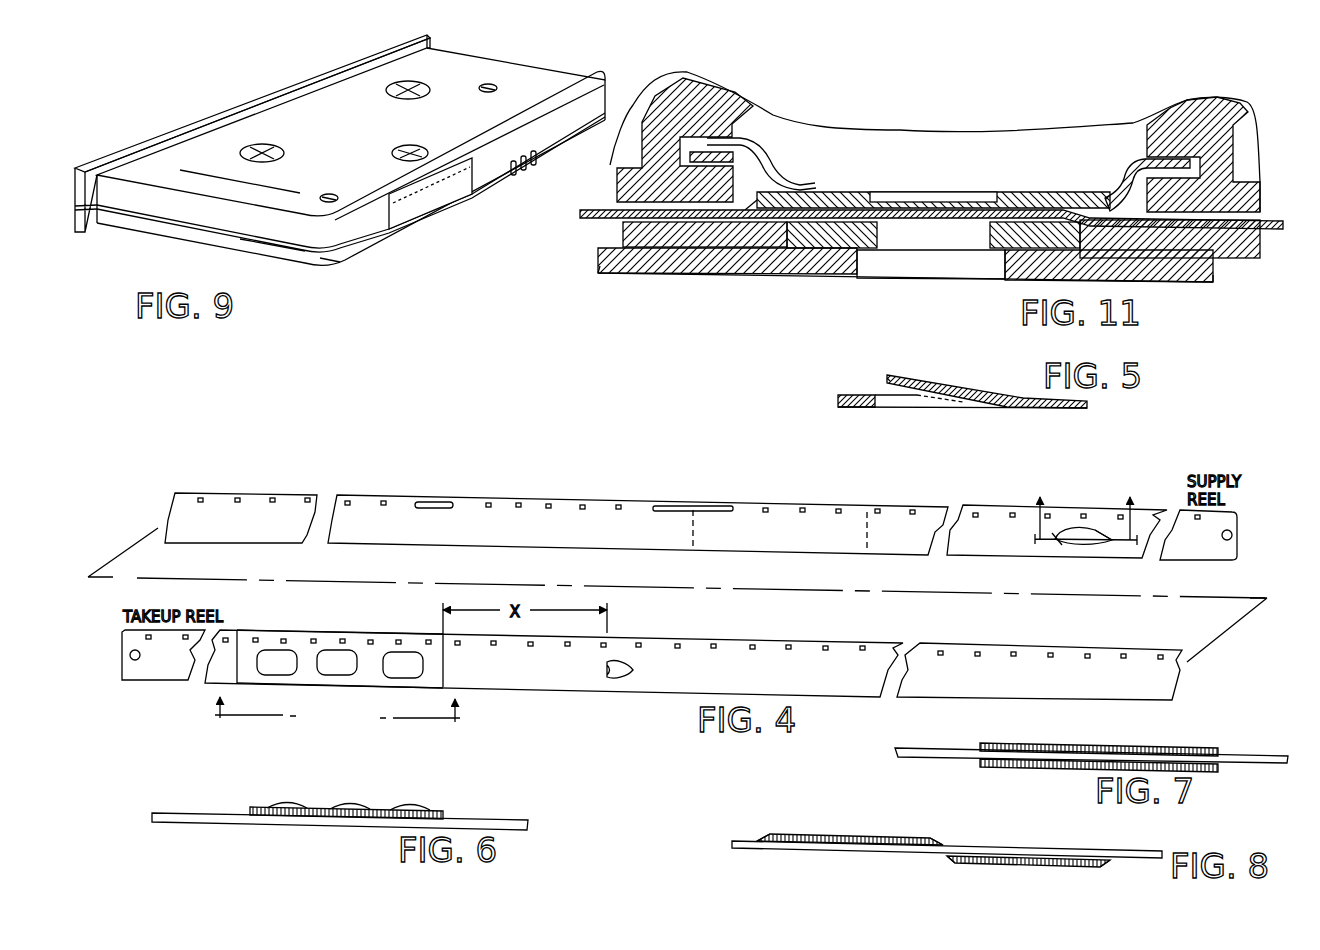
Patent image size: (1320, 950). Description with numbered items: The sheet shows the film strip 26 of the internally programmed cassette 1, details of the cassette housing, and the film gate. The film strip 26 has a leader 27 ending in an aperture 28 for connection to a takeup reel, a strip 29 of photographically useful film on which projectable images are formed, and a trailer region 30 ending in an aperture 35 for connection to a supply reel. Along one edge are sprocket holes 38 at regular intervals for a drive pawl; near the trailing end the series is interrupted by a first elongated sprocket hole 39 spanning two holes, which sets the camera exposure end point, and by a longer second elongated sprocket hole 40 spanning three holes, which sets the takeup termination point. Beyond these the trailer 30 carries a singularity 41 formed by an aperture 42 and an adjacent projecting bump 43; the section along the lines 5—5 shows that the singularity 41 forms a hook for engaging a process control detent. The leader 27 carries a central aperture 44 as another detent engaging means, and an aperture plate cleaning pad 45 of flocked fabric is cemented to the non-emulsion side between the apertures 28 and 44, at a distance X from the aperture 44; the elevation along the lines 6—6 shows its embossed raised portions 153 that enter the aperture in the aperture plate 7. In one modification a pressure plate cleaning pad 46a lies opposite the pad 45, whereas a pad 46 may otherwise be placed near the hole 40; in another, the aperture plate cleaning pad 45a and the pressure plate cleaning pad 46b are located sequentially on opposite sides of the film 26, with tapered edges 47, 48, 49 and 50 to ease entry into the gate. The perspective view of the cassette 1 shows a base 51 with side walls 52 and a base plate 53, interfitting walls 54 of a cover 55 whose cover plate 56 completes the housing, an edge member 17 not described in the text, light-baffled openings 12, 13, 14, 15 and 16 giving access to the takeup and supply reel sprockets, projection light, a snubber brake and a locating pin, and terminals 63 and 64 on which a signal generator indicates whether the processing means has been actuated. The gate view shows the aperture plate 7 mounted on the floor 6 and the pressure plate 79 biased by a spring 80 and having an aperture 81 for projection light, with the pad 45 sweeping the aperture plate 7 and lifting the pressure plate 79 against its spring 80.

In FIG. 9, the cassette 1 is at (478, 49).
In FIG. 4, the section line 5— 5 is at (1086, 506).
In FIG. 11, the floor 6 is at (825, 275).
In FIG. 4, the floor 6 is at (338, 727).
In FIG. 11, the aperture plate 7 is at (880, 252).
In FIG. 9, the light-baffled opening 12 is at (266, 160).
In FIG. 9, the light-baffled opening 13 is at (420, 93).
In FIG. 9, the light-baffled opening 14 is at (395, 154).
In FIG. 9, the light-baffled opening 15 is at (330, 193).
In FIG. 9, the light-baffled opening 16 is at (499, 89).
In FIG. 9, the rail 17 is at (333, 72).
In FIG. 9, the film strip 26 is at (440, 190).
In FIG. 11, the film strip 26 is at (592, 220).
In FIG. 5, the film strip 26 is at (1075, 410).
In FIG. 4, the film strip 26 is at (296, 486).
In FIG. 6, the film strip 26 is at (180, 813).
In FIG. 7, the film strip 26 is at (928, 748).
In FIG. 8, the film strip 26 is at (817, 853).
In FIG. 4, the leader 27 is at (172, 686).
In FIG. 4, the aperture 28 is at (130, 655).
In FIG. 4, the strip of photographically useful film 29 is at (292, 537).
In FIG. 4, the trailer region 30 is at (534, 496).
In FIG. 4, the aperture 35 is at (1233, 535).
In FIG. 4, the sprocket holes 38 is at (238, 497).
In FIG. 4, the first elongated sprocket hole 39 is at (450, 505).
In FIG. 4, the second elongated sprocket hole 40 is at (668, 508).
In FIG. 5, the singularity 41 is at (991, 390).
In FIG. 4, the singularity 41 is at (1093, 551).
In FIG. 5, the aperture 42 is at (883, 404).
In FIG. 4, the aperture 42 is at (1065, 547).
In FIG. 5, the projecting bump 43 is at (935, 386).
In FIG. 4, the projecting bump 43 is at (1076, 532).
In FIG. 4, the aperture 44 is at (606, 676).
In FIG. 11, the aperture plate cleaning pad 45 is at (967, 225).
In FIG. 4, the aperture plate cleaning pad 45 is at (350, 640).
In FIG. 6, the aperture plate cleaning pad 45 is at (340, 807).
In FIG. 7, the aperture plate cleaning pad 45 is at (1023, 745).
In FIG. 8, the aperture plate cleaning pad 45a is at (849, 836).
In FIG. 4, the pressure plate cleaning pad 46 is at (781, 522).
In FIG. 7, the pressure plate cleaning pad 46a is at (1025, 771).
In FIG. 8, the pressure plate cleaning pad 46b is at (1028, 874).
In FIG. 8, the tapered edge 47 is at (936, 840).
In FIG. 8, the tapered edge 48 is at (763, 834).
In FIG. 8, the tapered edge 49 is at (1104, 864).
In FIG. 8, the tapered edge 50 is at (953, 862).
In FIG. 9, the base 51 is at (334, 270).
In FIG. 9, the side walls 52 is at (313, 256).
In FIG. 11, the side walls 52 is at (757, 240).
In FIG. 11, the base plate 53 is at (886, 135).
In FIG. 9, the walls 54 is at (175, 212).
In FIG. 9, the cover 55 is at (183, 150).
In FIG. 9, the cover plate 56 is at (215, 163).
In FIG. 9, the terminal 63 is at (513, 177).
In FIG. 9, the terminal 64 is at (532, 167).
In FIG. 11, the pressure plate 79 is at (1042, 192).
In FIG. 11, the spring 80 is at (790, 180).
In FIG. 11, the aperture 81 is at (985, 192).
In FIG. 4, the raised portions 153 is at (290, 670).
In FIG. 6, the raised portions 153 is at (297, 803).